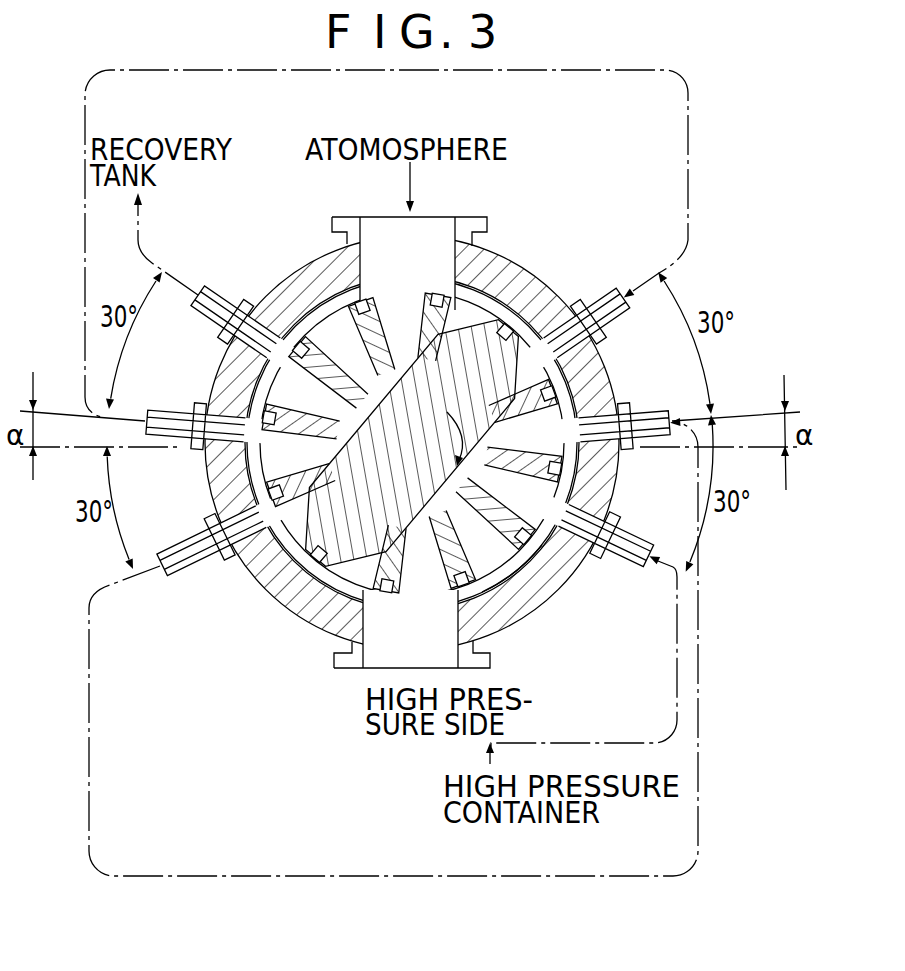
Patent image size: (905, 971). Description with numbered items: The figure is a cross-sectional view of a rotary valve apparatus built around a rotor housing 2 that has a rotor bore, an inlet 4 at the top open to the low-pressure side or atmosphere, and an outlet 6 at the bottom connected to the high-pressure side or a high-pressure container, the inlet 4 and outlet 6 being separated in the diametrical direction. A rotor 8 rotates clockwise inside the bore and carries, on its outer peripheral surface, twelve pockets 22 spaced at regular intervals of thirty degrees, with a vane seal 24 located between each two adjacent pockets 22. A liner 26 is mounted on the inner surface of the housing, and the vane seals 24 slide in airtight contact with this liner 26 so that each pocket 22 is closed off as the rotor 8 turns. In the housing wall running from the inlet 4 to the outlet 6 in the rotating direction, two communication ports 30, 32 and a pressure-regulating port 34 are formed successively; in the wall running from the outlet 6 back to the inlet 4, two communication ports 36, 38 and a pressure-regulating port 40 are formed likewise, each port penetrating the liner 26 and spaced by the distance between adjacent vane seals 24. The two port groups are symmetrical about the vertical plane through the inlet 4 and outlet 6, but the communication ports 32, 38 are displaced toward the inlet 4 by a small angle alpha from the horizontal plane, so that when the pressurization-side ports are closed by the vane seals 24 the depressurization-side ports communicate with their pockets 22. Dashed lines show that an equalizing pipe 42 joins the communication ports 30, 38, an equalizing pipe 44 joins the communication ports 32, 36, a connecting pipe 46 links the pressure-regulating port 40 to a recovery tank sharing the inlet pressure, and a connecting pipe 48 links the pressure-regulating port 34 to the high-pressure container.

The rotor housing 2 is at (527, 262).
The inlet 4 is at (450, 233).
The outlet 6 is at (370, 670).
The rotor 8 is at (422, 452).
The pockets 22 is at (327, 323).
The vane seals 24 is at (455, 592).
The liner 26 is at (518, 578).
The communication port 30 is at (595, 335).
The communication port 32 is at (618, 440).
The pressure-regulating port 34 is at (590, 545).
The communication port 36 is at (232, 535).
The communication port 38 is at (222, 410).
The pressure-regulating port 40 is at (256, 305).
The equalizing pipe 42 is at (690, 206).
The equalizing pipe 44 is at (700, 645).
The connecting pipe 46 is at (148, 256).
The connecting pipe 48 is at (672, 673).